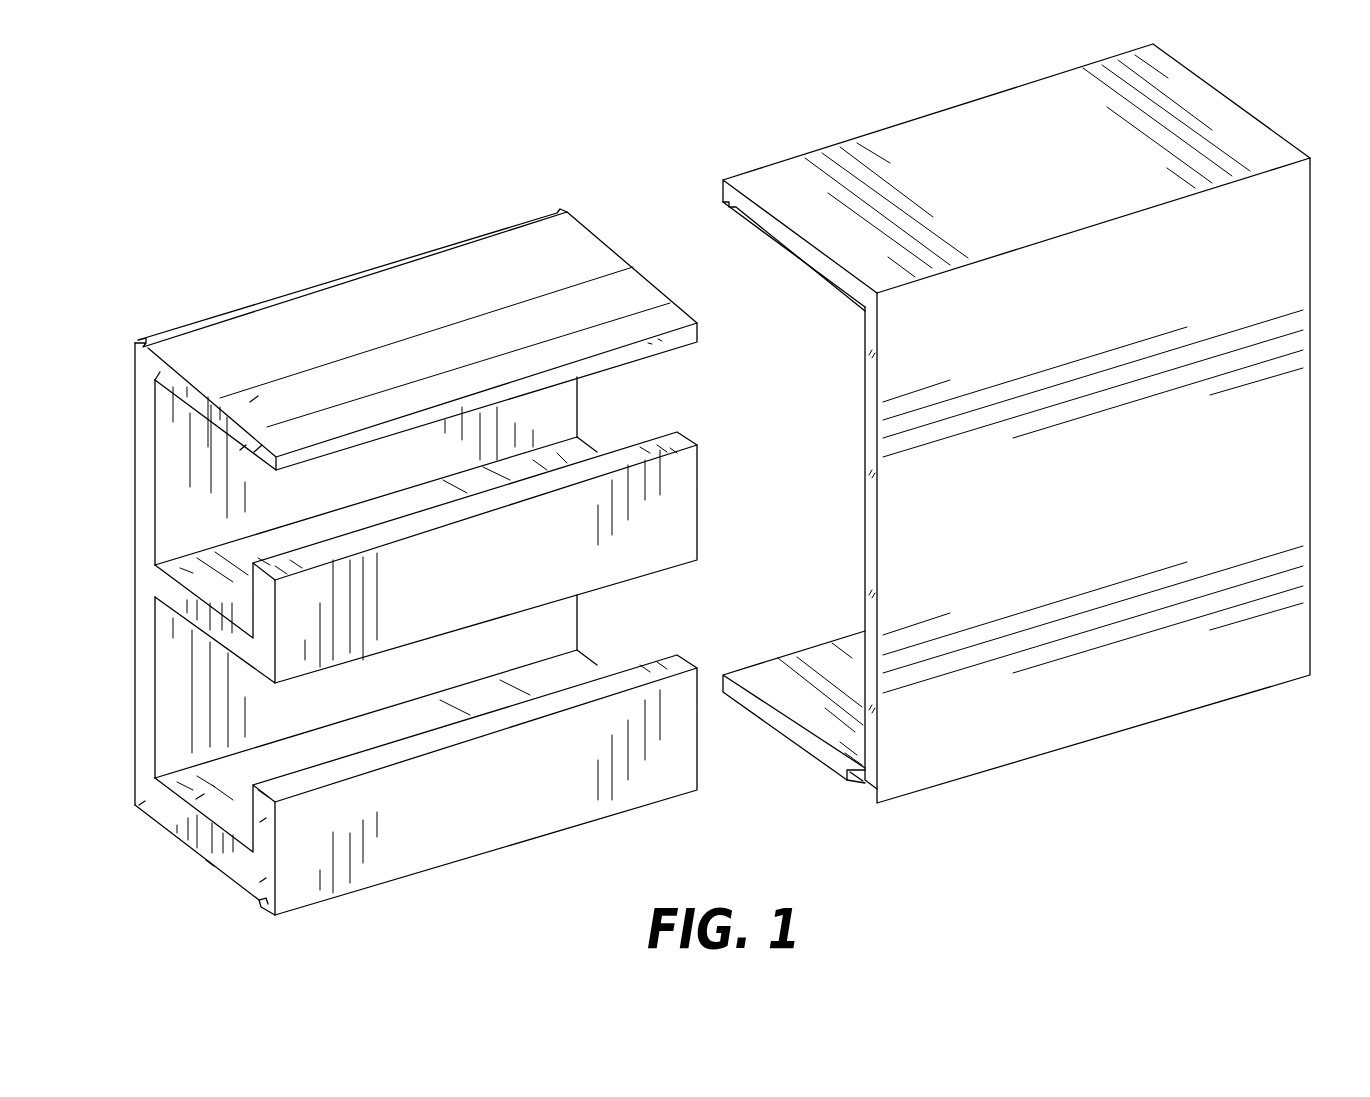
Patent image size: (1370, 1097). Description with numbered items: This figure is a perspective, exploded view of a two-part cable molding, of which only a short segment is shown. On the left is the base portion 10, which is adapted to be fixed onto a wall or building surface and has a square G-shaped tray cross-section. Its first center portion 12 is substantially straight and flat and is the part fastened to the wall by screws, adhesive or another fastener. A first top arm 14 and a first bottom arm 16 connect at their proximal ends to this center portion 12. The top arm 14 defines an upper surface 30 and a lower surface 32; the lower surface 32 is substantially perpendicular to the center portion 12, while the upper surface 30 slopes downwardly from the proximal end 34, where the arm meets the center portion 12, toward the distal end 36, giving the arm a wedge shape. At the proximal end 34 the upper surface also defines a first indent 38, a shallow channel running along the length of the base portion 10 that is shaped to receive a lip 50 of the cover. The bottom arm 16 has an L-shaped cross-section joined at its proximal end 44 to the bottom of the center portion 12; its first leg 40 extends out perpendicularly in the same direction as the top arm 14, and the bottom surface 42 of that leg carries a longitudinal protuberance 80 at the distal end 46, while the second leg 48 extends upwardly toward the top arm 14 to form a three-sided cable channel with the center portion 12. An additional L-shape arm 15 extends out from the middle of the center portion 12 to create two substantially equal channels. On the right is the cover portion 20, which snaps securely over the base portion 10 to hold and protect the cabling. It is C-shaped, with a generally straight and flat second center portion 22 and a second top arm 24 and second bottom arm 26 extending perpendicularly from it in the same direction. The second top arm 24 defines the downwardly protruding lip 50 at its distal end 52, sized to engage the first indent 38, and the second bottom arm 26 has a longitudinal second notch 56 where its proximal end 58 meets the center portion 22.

The base portion 10 is at (249, 226).
The first center portion 12 is at (147, 620).
The first top arm 14 is at (204, 400).
The additional L-shape arm 15 is at (248, 651).
The first bottom arm 16 is at (195, 838).
The cover portion 20 is at (866, 102).
The second center portion 22 is at (1300, 465).
The second top arm 24 is at (1185, 136).
The second bottom arm 26 is at (828, 730).
The upper surface 30 is at (254, 398).
The lower surface 32 is at (243, 447).
The proximal end 34 is at (158, 366).
The distal end 36 is at (258, 448).
The first indent 38 is at (148, 336).
The first leg 40 is at (210, 800).
The bottom surface 42 is at (210, 862).
The proximal end 44 is at (142, 803).
The distal end 46 is at (263, 880).
The second leg 48 is at (263, 820).
The lip 50 is at (731, 206).
The distal end 52 is at (765, 178).
The second notch 56 is at (860, 792).
The proximal end 58 is at (847, 778).
The longitudinal protuberance 80 is at (267, 911).